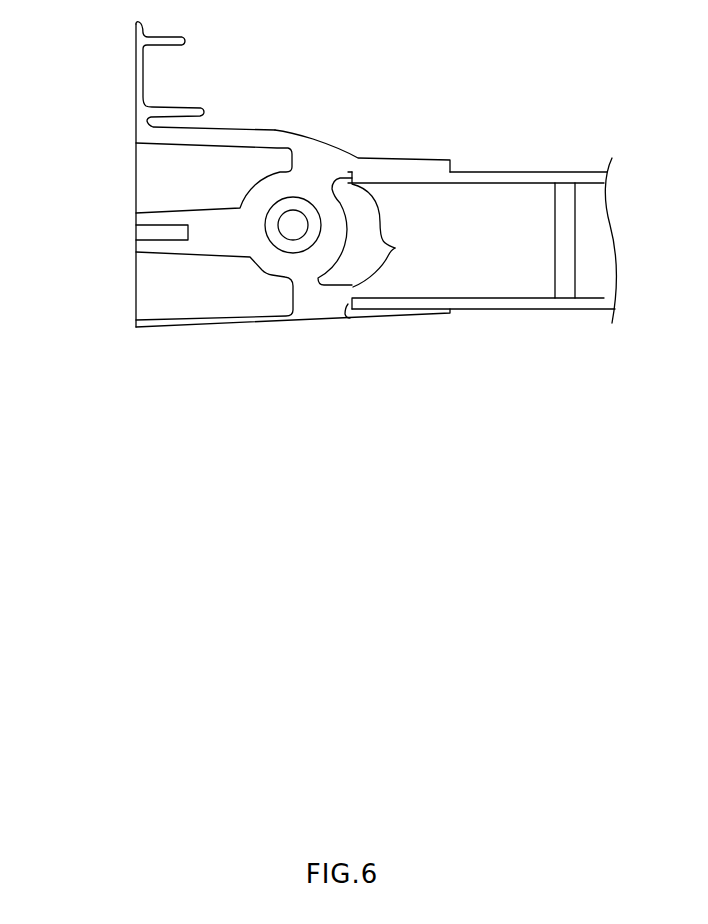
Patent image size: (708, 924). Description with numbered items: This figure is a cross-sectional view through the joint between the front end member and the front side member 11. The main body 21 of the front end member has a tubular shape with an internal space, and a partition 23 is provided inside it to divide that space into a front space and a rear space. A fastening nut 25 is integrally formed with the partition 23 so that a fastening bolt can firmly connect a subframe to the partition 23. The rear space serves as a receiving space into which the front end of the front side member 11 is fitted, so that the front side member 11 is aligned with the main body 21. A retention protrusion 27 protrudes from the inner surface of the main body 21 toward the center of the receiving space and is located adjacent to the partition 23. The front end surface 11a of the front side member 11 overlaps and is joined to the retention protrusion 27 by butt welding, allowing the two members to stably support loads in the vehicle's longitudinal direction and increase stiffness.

The front side member 11 is at (477, 237).
The front end surface 11a is at (350, 175).
The main body 21 is at (242, 198).
The partition 23 is at (285, 158).
The fastening nut 25 is at (267, 258).
The retention protrusion 27 is at (392, 235).